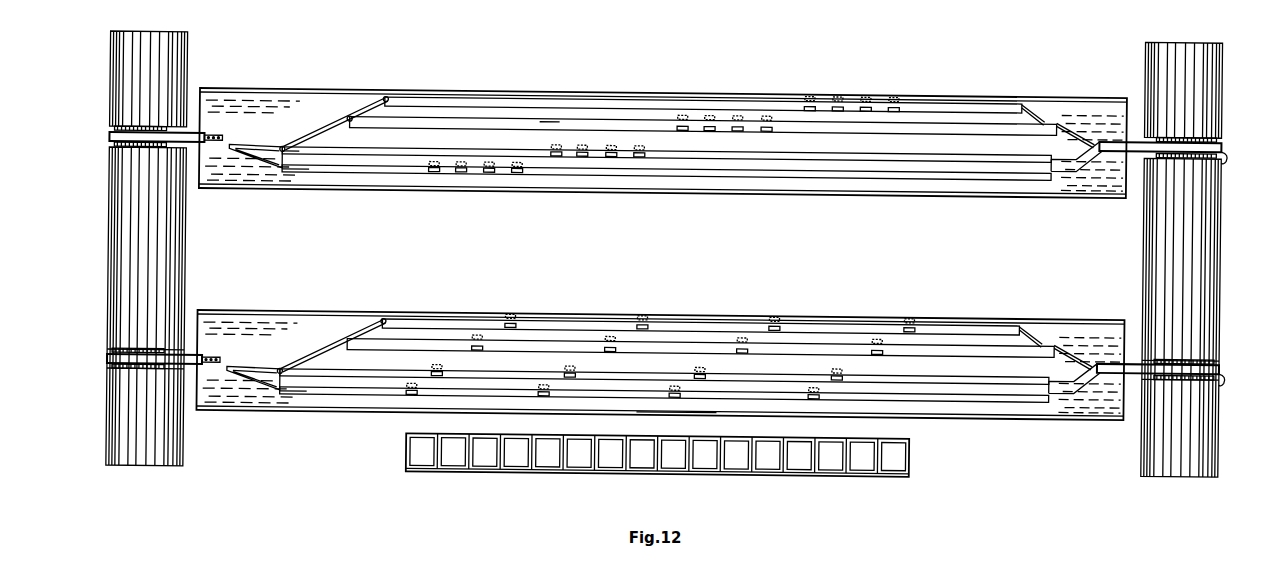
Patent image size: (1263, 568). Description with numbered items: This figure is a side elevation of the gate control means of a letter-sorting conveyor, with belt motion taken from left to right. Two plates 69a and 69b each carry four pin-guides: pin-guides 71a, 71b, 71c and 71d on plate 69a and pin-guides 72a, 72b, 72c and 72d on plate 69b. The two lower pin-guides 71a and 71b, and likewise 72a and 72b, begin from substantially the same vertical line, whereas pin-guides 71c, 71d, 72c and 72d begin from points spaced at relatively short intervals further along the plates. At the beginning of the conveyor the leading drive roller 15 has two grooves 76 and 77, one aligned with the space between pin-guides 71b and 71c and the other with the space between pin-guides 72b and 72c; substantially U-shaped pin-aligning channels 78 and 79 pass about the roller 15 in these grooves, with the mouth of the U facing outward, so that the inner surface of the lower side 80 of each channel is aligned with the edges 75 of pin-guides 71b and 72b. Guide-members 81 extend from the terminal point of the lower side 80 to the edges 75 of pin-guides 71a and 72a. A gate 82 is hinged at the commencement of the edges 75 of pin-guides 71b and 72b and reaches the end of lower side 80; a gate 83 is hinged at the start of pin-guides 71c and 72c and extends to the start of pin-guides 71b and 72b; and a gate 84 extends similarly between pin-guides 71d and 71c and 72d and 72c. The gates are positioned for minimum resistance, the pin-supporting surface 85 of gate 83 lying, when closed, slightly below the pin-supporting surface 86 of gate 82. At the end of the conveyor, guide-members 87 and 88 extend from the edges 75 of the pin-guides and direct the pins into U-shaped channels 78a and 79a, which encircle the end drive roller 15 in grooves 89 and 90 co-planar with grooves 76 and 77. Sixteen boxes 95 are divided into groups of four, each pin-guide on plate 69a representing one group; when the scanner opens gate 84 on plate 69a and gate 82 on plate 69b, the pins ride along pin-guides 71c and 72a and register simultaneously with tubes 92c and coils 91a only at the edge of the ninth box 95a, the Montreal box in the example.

The drive roller 15 is at (167, 37).
The plate 69a is at (232, 97).
The plate 69b is at (212, 408).
The pin-guide 71a is at (340, 177).
The pin-guide 71b is at (375, 152).
The pin-guide 71c is at (452, 125).
The pin-guide 71d is at (490, 103).
The pin-guide 72a is at (313, 398).
The pin-guide 72b is at (350, 375).
The pin-guide 72c is at (418, 345).
The pin-guide 72d is at (470, 325).
The edge 75 is at (305, 165).
The groove 76 is at (113, 130).
The groove 77 is at (113, 354).
The pin-aligning channel 78 is at (113, 140).
The U-shaped channel 78a is at (1225, 153).
The pin-aligning channel 79 is at (113, 361).
The U-shaped channel 79a is at (1225, 375).
The lower side 80 is at (193, 150).
The guide-member 81 is at (257, 163).
The gate 82 is at (265, 140).
The gate 83 is at (310, 128).
The gate 84 is at (372, 100).
The pin-supporting surface 85 is at (312, 145).
The pin-supporting surface 86 is at (275, 140).
The guide-member 87 is at (1088, 152).
The guide-member 88 is at (1088, 374).
The groove 89 is at (1220, 134).
The groove 90 is at (1220, 356).
The coils 91a is at (680, 410).
The tubes 92c is at (683, 120).
The box 95 is at (803, 462).
The ninth box 95a is at (670, 462).